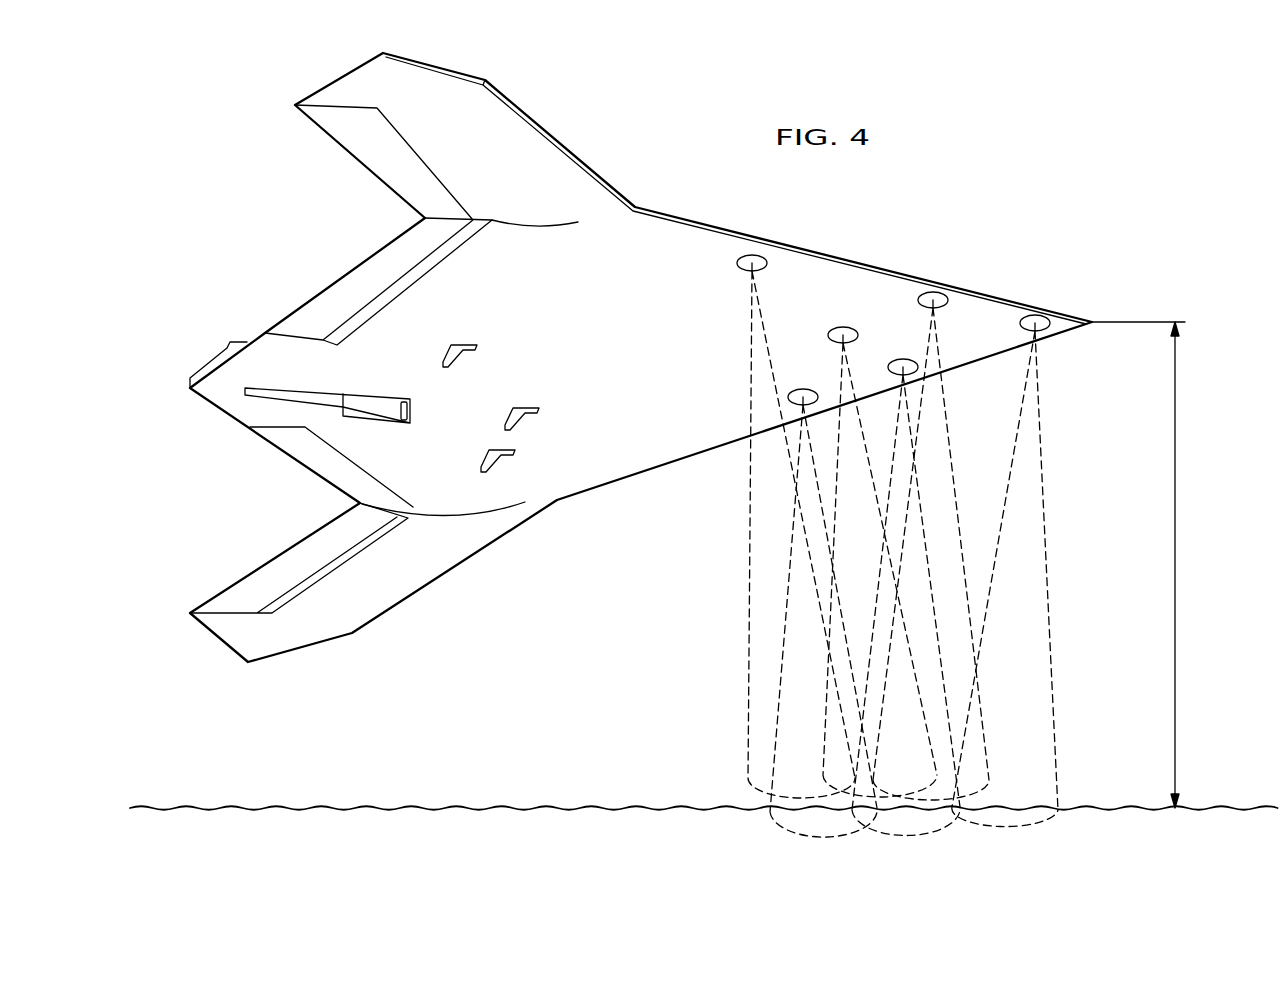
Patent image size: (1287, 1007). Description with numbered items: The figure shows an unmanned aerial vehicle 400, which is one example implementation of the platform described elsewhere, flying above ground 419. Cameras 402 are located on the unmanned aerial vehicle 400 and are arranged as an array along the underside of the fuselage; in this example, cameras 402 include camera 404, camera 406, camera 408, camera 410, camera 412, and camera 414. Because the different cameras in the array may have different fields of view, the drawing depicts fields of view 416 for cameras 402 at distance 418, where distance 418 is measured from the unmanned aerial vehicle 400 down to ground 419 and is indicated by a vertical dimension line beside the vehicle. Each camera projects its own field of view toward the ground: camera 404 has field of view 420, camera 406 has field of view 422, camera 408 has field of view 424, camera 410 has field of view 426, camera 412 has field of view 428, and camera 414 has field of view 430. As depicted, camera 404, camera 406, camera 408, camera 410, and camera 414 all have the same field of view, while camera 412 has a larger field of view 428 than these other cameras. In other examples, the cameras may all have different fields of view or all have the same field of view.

The unmanned aerial vehicle 400 is at (1141, 183).
The cameras 402 is at (712, 365).
The camera 404 is at (1040, 327).
The camera 406 is at (948, 308).
The camera 408 is at (882, 342).
The camera 410 is at (747, 272).
The camera 412 is at (832, 335).
The camera 414 is at (812, 398).
The fields of view 416 is at (690, 566).
The distance 418 is at (1178, 603).
The ground 419 is at (565, 806).
The field of view 420 is at (1047, 595).
The field of view 422 is at (937, 410).
The field of view 424 is at (920, 547).
The field of view 426 is at (748, 608).
The field of view 428 is at (835, 743).
The field of view 430 is at (782, 670).